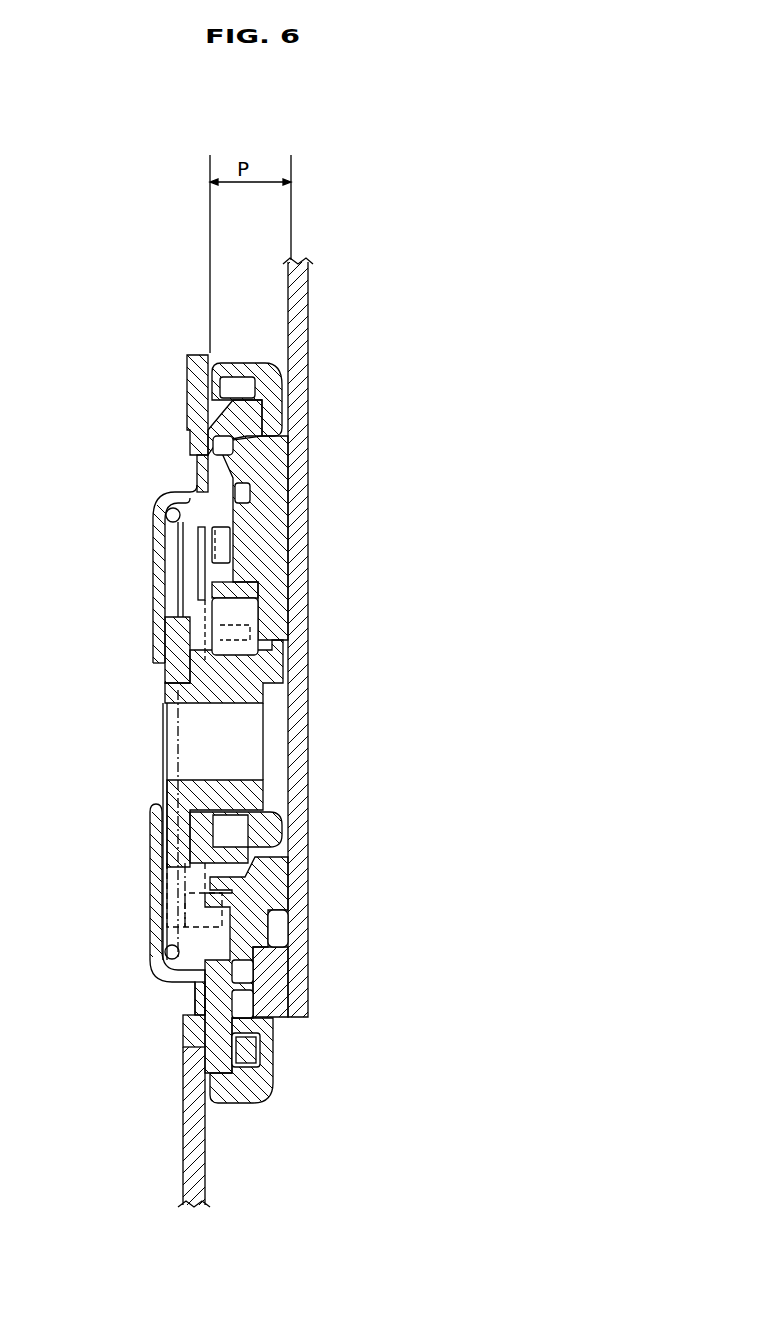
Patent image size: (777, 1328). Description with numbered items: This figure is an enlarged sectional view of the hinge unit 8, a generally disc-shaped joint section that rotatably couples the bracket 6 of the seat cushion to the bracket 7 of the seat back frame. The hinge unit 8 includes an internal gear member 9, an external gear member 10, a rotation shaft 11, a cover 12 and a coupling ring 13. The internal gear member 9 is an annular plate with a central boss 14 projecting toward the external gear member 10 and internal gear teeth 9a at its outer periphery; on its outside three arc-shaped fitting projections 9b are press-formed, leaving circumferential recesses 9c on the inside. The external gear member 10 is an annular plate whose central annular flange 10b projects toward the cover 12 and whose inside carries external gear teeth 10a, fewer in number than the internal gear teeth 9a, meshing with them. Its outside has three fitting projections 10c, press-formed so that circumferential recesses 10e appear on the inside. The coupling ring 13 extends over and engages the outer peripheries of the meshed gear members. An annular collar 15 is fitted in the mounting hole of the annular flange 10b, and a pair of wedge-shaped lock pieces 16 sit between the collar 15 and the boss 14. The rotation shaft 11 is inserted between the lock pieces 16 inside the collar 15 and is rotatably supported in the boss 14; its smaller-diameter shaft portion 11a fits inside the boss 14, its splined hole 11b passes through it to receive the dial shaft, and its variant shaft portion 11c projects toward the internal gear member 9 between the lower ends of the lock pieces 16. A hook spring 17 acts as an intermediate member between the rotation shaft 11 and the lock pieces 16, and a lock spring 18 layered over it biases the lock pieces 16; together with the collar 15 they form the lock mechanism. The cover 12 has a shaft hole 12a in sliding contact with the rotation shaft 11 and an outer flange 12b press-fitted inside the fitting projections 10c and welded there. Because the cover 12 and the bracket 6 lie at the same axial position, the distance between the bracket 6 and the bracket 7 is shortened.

The bracket 6 is at (185, 1150).
The bracket 7 is at (310, 290).
The hinge unit 8 is at (288, 1060).
The internal gear member 9 is at (275, 452).
The internal gear teeth 9a is at (250, 1005).
The fitting projections 9b is at (296, 558).
The circumferential recesses 9c is at (276, 918).
The external gear member 10 is at (195, 415).
The external gear teeth 10a is at (245, 972).
The annular flange 10b is at (200, 578).
The fitting projections 10c is at (212, 444).
The circumferential recesses 10e is at (262, 432).
The rotation shaft 11 is at (158, 681).
The smaller-diameter shaft portion 11a is at (250, 692).
The splined hole 11b is at (200, 702).
The variant shaft portion 11c is at (242, 852).
The cover 12 is at (152, 855).
The shaft hole 12a is at (155, 806).
The outer flange 12b is at (198, 1000).
The coupling ring 13 is at (232, 365).
The boss 14 is at (245, 795).
The collar 15 is at (247, 590).
The lock pieces 16 is at (250, 613).
The hook spring 17 is at (172, 545).
The lock spring 18 is at (180, 600).